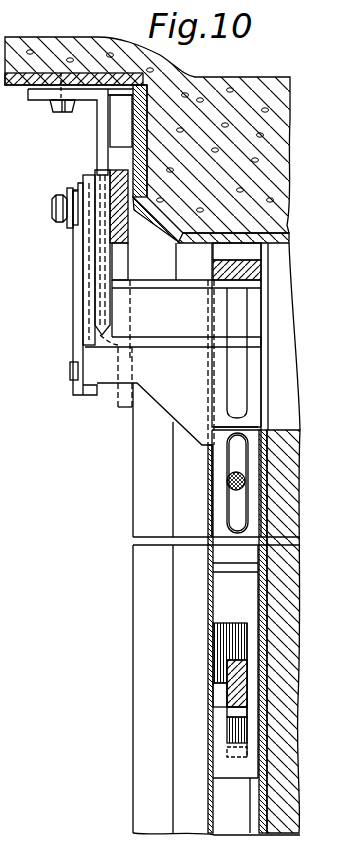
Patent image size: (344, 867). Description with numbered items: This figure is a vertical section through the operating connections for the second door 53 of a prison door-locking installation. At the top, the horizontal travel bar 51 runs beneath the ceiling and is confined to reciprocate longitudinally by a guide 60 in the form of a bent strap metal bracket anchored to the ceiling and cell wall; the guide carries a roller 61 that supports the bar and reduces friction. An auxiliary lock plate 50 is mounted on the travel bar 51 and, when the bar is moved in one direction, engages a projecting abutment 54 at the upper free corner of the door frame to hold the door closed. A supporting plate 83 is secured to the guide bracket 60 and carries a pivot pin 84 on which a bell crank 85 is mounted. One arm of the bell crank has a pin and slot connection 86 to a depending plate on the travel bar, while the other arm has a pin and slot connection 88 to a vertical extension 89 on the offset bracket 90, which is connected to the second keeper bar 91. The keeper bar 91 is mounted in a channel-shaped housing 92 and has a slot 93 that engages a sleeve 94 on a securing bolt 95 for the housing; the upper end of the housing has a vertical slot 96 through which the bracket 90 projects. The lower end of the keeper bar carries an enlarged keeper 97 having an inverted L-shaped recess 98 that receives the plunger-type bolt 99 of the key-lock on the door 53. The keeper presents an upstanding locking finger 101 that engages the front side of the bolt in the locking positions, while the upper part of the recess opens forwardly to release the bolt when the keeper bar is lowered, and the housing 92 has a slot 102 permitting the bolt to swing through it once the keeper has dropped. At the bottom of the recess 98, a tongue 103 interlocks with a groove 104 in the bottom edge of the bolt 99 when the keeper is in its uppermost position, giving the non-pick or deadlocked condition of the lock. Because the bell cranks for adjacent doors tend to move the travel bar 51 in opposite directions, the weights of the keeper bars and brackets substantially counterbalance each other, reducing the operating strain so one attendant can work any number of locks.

The guide 60 is at (100, 127).
The horizontal travel bar 51 is at (110, 165).
The supporting plate 83 is at (85, 176).
The pivot pin 84 is at (52, 208).
The pin and slot connection 88 is at (62, 224).
The bell crank 85 is at (76, 284).
The vertical extension 89 is at (87, 305).
The plate 50 is at (98, 320).
The pin and slot connection 86 is at (70, 371).
The offset bracket 90 is at (157, 380).
The roller 61 is at (118, 258).
The projecting abutment 54 is at (157, 295).
The second door 53 is at (246, 268).
The slot 93 is at (226, 449).
The vertical slot 96 is at (208, 470).
The sleeve 94 is at (229, 480).
The securing bolt 95 is at (238, 492).
The keeper bar 91 is at (220, 558).
The housing 92 is at (212, 580).
The keeper 97 is at (225, 603).
The slot 102 is at (212, 665).
The plunger-type bolt 99 is at (230, 678).
The locking finger 101 is at (222, 697).
The groove 104 is at (228, 712).
The recess 98 is at (233, 731).
The tongue 103 is at (226, 753).